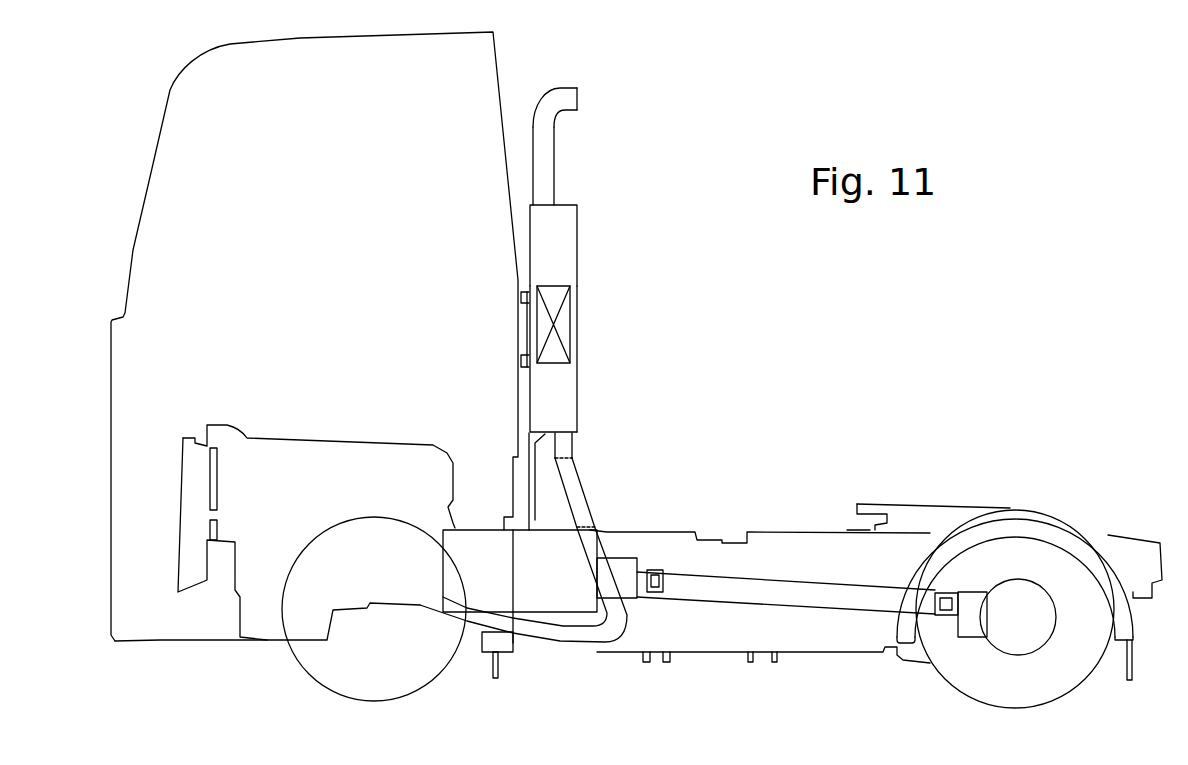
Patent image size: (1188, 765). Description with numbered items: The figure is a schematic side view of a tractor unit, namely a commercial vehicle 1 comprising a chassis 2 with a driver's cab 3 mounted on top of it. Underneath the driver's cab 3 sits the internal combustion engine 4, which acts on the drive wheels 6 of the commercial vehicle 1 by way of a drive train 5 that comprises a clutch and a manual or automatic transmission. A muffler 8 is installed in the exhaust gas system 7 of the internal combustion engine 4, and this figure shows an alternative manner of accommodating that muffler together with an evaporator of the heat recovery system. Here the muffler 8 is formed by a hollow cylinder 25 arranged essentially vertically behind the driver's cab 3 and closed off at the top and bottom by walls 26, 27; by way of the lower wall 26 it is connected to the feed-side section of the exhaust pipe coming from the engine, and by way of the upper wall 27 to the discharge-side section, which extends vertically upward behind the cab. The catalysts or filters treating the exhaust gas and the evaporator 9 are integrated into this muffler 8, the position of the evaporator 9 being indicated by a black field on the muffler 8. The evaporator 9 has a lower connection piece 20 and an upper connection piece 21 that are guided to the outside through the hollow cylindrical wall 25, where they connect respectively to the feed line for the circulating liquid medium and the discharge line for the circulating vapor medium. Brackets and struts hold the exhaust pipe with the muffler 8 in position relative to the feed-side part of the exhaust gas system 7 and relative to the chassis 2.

The commercial vehicle 1 is at (737, 505).
The chassis 2 is at (807, 526).
The driver's cab 3 is at (104, 353).
The internal combustion engine 4 is at (272, 518).
The drive train 5 is at (841, 600).
The drive wheels 6 is at (372, 670).
The exhaust gas system 7 is at (551, 640).
The muffler 8 is at (587, 394).
The evaporator 9 is at (570, 320).
The lower connection piece 20 is at (521, 358).
The upper connection piece 21 is at (521, 297).
The hollow cylinder 25 is at (580, 370).
The wall 26 is at (574, 436).
The wall 27 is at (566, 205).